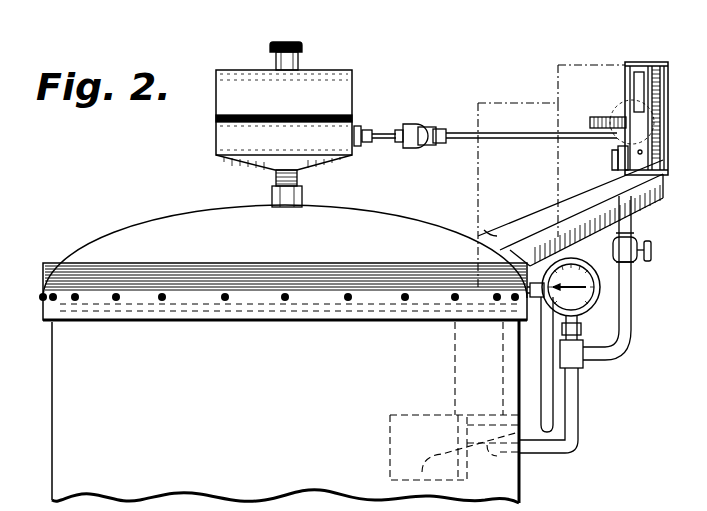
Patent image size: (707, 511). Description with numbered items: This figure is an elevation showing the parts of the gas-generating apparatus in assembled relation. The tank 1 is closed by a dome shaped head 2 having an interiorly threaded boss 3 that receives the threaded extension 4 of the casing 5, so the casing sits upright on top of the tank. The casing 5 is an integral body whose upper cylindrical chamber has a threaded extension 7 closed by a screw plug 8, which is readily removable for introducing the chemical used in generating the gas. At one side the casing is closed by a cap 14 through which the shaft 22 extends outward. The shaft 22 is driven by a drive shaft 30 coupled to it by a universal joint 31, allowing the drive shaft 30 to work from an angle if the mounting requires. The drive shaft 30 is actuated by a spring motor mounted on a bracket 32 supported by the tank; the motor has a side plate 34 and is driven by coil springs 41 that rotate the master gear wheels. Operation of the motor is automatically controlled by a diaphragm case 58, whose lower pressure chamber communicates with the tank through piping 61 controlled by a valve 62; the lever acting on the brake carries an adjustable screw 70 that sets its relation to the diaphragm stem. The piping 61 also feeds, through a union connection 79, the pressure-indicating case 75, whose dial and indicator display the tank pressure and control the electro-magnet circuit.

The tank 1 is at (283, 383).
The dome shaped head 2 is at (285, 251).
The interiorly threaded boss 3 is at (305, 198).
The threaded extension 4 is at (300, 178).
The casing 5 is at (353, 100).
The threaded extension 7 is at (299, 62).
The screw plug 8 is at (290, 43).
The cap 14 is at (360, 146).
The shaft 22 is at (386, 132).
The drive shaft 30 is at (463, 132).
The universal joint 31 is at (423, 124).
The bracket 32 is at (637, 194).
The side plate 34 is at (625, 62).
The coil springs 41 is at (620, 152).
The case 58 is at (605, 117).
The piping 61 is at (580, 408).
The valve 62 is at (638, 258).
The adjustable screw 70 is at (617, 134).
The case 75 is at (601, 290).
The union connection 79 is at (582, 333).